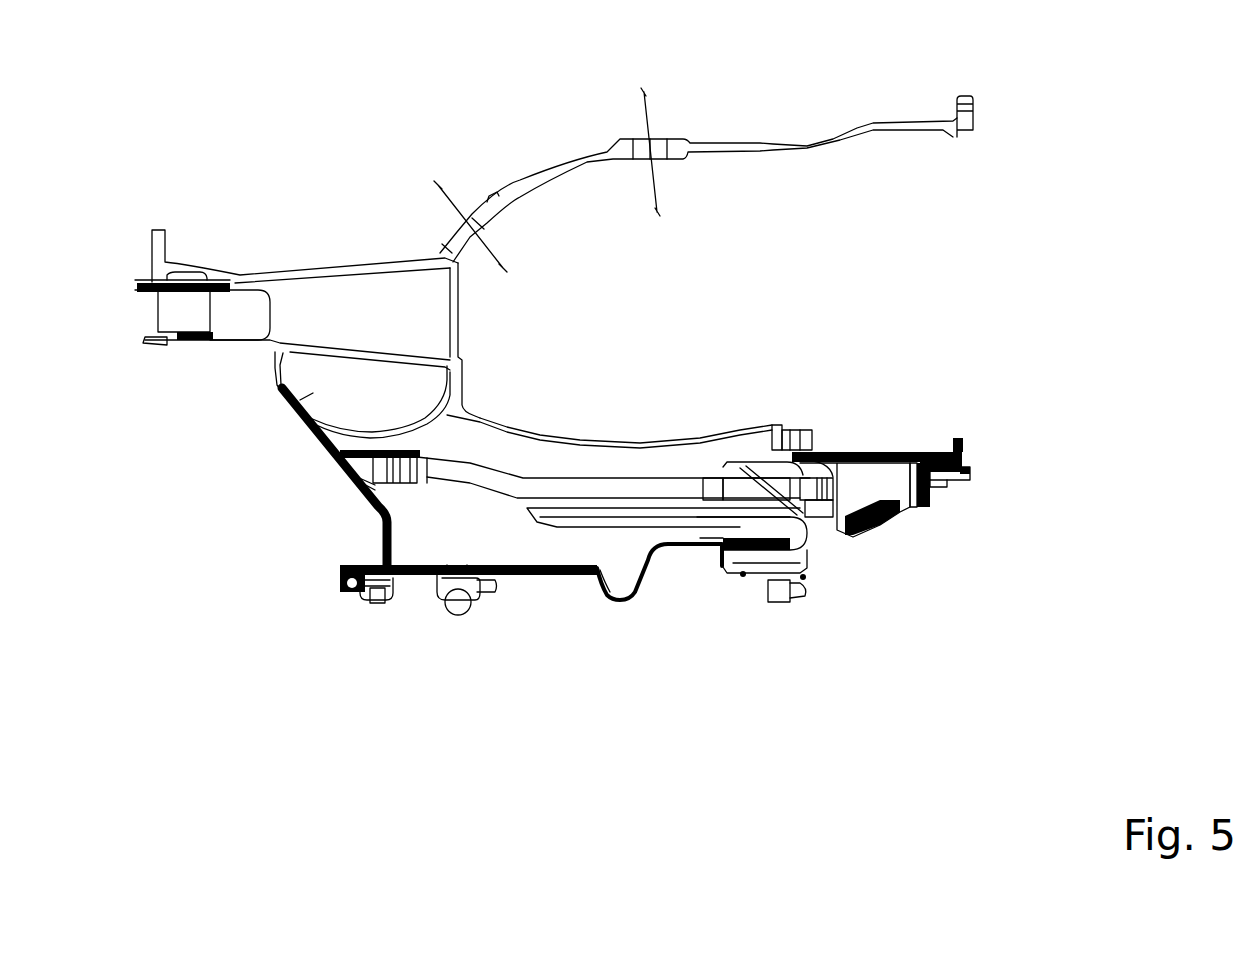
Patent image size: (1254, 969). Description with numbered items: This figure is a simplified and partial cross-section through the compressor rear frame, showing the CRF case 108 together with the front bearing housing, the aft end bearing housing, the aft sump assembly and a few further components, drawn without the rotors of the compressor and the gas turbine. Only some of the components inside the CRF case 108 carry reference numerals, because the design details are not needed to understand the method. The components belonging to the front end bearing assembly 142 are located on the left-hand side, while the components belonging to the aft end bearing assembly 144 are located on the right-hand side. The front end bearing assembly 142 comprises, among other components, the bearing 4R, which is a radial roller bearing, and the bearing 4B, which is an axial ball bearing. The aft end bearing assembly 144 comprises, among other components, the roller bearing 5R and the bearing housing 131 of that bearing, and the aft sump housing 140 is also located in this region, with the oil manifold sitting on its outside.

The CRF case 108 is at (921, 122).
The bearing housing 131 is at (720, 550).
The aft sump housing 140 is at (692, 558).
The front end bearing assembly 142 is at (611, 815).
The aft end bearing assembly 144 is at (938, 815).
The bearing 4R is at (377, 603).
The bearing 4B is at (460, 617).
The roller bearing 5R is at (780, 603).